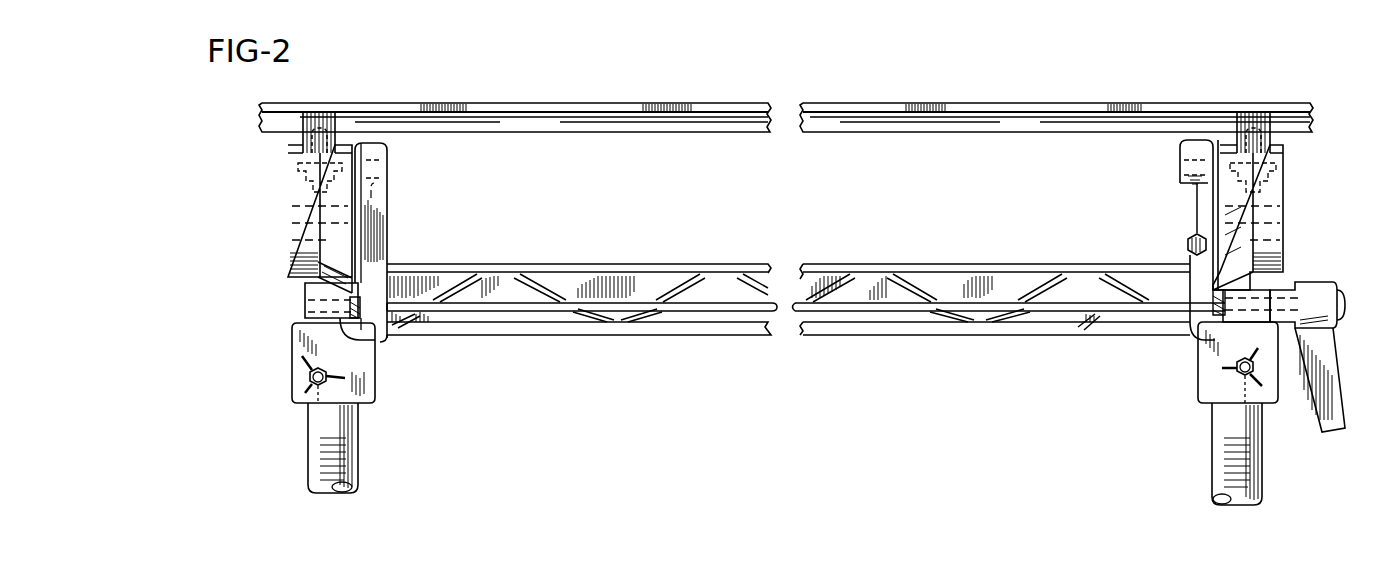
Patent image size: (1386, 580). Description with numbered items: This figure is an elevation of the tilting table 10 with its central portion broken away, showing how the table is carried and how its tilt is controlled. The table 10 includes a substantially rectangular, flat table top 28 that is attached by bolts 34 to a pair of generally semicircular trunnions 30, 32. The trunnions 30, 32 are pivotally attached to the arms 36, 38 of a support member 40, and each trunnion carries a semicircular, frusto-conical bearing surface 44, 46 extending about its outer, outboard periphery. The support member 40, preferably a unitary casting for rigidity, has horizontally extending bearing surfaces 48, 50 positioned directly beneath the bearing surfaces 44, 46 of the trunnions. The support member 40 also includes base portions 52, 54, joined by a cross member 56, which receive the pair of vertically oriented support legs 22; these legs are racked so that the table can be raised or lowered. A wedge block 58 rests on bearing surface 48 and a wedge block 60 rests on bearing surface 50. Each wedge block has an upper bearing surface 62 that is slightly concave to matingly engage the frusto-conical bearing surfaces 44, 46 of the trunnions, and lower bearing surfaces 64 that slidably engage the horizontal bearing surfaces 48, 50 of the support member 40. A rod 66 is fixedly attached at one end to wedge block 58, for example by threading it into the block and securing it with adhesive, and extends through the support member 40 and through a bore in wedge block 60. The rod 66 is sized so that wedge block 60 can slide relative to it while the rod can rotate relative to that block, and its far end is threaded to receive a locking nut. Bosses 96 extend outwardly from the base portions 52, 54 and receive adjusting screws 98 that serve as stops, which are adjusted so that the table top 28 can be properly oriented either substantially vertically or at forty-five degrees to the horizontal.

The tilting table 10 is at (896, 103).
The support legs 22 is at (352, 433).
The table top 28 is at (553, 103).
The trunnion 30 is at (284, 216).
The trunnion 32 is at (1287, 195).
The bolts 34 is at (318, 183).
The arm 36 is at (372, 200).
The arm 38 is at (1200, 208).
The support member 40 is at (930, 292).
The bearing surface 44 is at (330, 245).
The bearing surface 46 is at (1190, 187).
The bearing surface 48 is at (305, 305).
The bearing surface 50 is at (1242, 304).
The base portion 52 is at (377, 380).
The base portion 54 is at (1210, 395).
The cross member 56 is at (600, 266).
The wedge block 58 is at (305, 292).
The wedge block 60 is at (1263, 285).
The upper bearing surface 62 is at (366, 282).
The lower bearing surfaces 64 is at (380, 340).
The rod 66 is at (640, 305).
The bosses 96 is at (318, 398).
The adjusting screws 98 is at (308, 376).